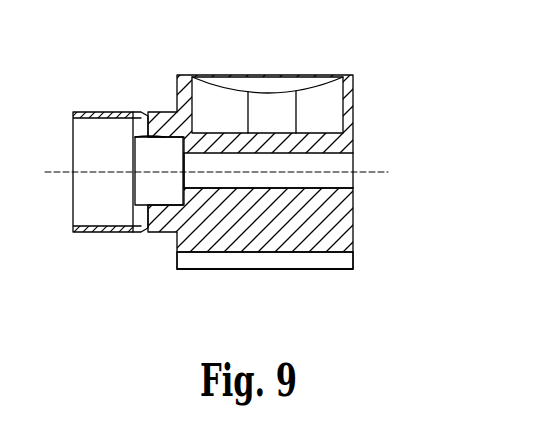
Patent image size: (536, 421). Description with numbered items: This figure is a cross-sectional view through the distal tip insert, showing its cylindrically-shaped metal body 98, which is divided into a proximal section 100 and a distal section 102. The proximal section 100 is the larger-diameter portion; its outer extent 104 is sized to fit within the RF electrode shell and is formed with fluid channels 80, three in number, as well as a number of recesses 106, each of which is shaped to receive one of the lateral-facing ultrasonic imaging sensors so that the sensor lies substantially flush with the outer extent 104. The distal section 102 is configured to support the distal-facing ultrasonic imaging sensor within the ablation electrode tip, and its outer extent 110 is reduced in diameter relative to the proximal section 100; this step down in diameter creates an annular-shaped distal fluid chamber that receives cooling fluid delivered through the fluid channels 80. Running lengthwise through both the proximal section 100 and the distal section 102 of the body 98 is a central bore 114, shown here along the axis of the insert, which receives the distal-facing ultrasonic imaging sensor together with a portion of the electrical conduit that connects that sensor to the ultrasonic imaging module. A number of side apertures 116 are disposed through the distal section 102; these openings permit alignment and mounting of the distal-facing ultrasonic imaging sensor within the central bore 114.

The fluid channels 80 is at (294, 256).
The metal body 98 is at (343, 230).
The proximal section 100 is at (336, 284).
The distal section 102 is at (114, 278).
The outer extent 104 is at (248, 270).
The recesses 106 is at (286, 86).
The outer extent 110 is at (97, 111).
The central bore 114 is at (345, 182).
The side apertures 116 is at (146, 116).